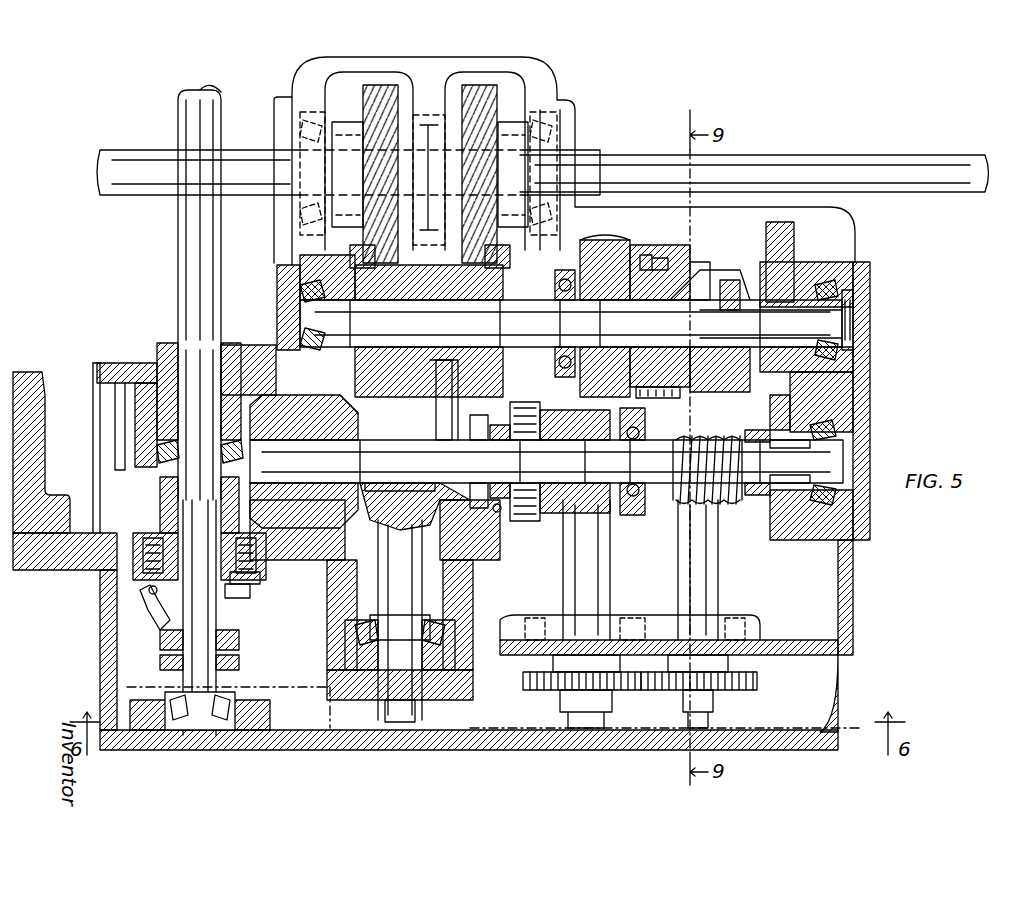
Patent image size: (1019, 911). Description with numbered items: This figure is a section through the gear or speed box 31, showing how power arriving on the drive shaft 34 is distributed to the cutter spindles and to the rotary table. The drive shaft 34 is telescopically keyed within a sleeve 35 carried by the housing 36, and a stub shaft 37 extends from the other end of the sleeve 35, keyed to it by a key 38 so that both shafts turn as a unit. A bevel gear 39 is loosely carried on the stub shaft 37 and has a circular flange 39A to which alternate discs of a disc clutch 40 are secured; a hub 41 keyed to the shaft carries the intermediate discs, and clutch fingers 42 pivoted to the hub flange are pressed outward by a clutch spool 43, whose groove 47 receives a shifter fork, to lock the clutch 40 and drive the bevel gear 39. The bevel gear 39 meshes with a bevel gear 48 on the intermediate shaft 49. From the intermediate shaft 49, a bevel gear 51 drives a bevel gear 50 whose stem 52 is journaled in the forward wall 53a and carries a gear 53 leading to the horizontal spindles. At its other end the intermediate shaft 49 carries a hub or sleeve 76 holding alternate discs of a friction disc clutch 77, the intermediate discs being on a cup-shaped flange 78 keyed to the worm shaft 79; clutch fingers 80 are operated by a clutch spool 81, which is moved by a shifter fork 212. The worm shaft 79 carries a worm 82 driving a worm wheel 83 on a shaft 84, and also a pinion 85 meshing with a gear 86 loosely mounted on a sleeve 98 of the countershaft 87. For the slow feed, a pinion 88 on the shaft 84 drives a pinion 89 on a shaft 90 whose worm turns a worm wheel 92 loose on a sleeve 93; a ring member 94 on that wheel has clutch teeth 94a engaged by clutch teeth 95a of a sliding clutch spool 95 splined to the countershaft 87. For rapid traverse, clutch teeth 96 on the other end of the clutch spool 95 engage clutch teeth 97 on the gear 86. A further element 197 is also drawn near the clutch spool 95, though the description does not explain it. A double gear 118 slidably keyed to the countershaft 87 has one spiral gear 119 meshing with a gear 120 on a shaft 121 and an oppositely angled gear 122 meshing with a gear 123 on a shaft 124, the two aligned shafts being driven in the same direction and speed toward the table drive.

The gear or speed box 31 is at (850, 598).
The drive shaft 34 is at (210, 234).
The sleeve 35 is at (165, 340).
The housing 36 is at (98, 358).
The stub shaft 37 is at (215, 632).
The key 38 is at (262, 322).
The bevel gear 39 is at (130, 524).
The circular flange 39A is at (258, 572).
The disc clutch 40 is at (250, 594).
The hub 41 is at (166, 627).
The clutch fingers 42 is at (150, 602).
The clutch spool 43 is at (238, 650).
The groove 47 is at (234, 666).
The bevel gear 48 is at (284, 312).
The intermediate shaft 49 is at (400, 474).
The bevel gear 50 is at (450, 522).
The bevel gear 51 is at (350, 418).
The stem 52 is at (408, 597).
The gear 53 is at (473, 692).
The forward wall 53a is at (526, 642).
The hub or sleeve 76 is at (486, 452).
The friction disc clutch 77 is at (536, 530).
The cup-shaped flange 78 is at (512, 537).
The worm shaft 79 is at (800, 502).
The clutch fingers 80 is at (494, 522).
The clutch spool 81 is at (428, 494).
The worm 82 is at (678, 507).
The worm wheel 83 is at (752, 457).
The shaft 84 is at (718, 584).
The pinion 85 is at (766, 502).
The gear 86 is at (780, 264).
The countershaft 87 is at (742, 322).
The pinion 88 is at (738, 697).
The pinion 89 is at (622, 700).
The shaft 90 is at (600, 596).
The worm wheel 92 is at (600, 267).
The sleeve 93 is at (562, 282).
The ring member 94 is at (648, 260).
The clutch teeth 94a is at (662, 260).
The clutch spool 95 is at (652, 390).
The clutch teeth 95a is at (690, 264).
The clutch teeth 96 is at (704, 394).
The clutch teeth 97 is at (730, 287).
The sleeve 98 is at (815, 294).
The double gear 118 is at (436, 294).
The gear 119 is at (360, 264).
The gear 120 is at (385, 90).
The shaft 121 is at (132, 178).
The gear 122 is at (518, 252).
The gear 123 is at (490, 92).
The shaft 124 is at (838, 148).
The shifter lever 197 is at (696, 280).
The shifter fork 212 is at (446, 408).